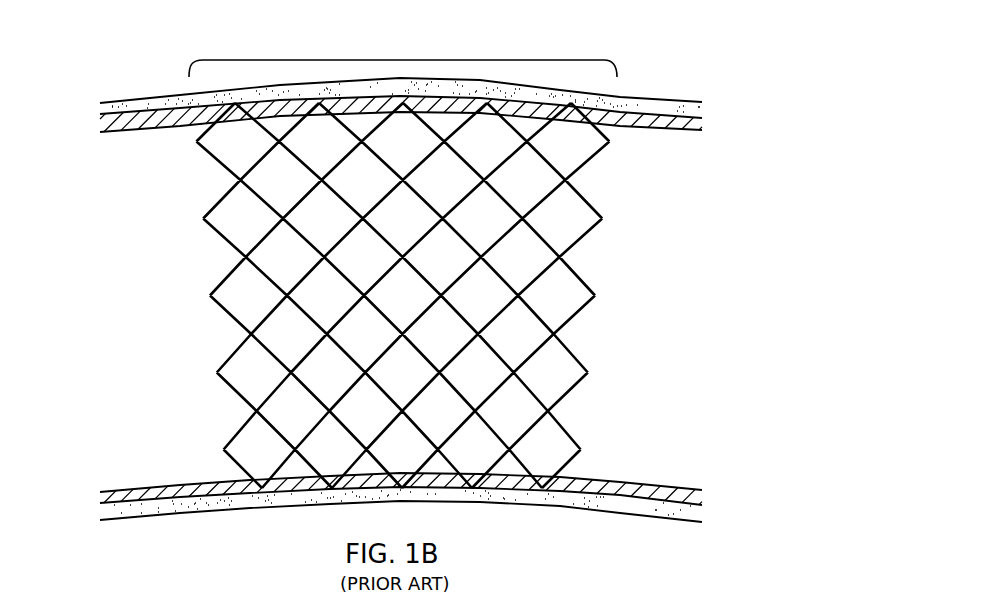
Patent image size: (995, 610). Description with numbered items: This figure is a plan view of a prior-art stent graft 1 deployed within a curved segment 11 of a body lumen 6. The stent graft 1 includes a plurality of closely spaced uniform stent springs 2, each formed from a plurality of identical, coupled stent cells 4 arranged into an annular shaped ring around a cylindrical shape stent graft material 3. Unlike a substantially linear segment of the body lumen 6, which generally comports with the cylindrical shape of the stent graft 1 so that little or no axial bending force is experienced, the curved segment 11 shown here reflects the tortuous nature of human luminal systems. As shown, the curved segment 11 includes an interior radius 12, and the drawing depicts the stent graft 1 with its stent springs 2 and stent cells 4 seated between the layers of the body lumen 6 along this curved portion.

The stent graft 1 is at (148, 58).
The stent springs 2 is at (297, 116).
The stent graft material 3 is at (133, 131).
The stent cells 4 is at (572, 395).
The body lumen 6 is at (682, 109).
The curved segment 11 is at (403, 45).
The interior radius 12 is at (288, 493).